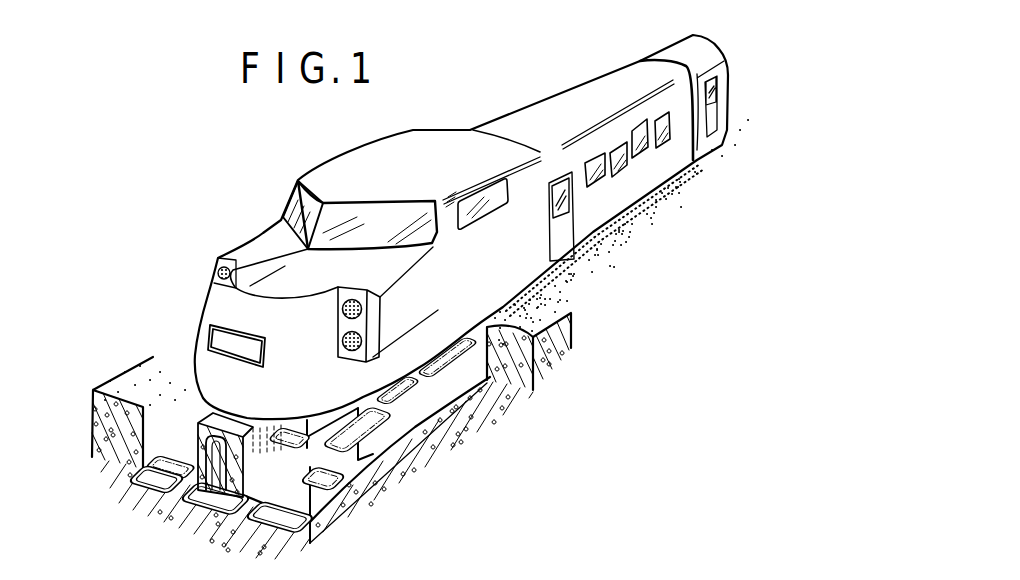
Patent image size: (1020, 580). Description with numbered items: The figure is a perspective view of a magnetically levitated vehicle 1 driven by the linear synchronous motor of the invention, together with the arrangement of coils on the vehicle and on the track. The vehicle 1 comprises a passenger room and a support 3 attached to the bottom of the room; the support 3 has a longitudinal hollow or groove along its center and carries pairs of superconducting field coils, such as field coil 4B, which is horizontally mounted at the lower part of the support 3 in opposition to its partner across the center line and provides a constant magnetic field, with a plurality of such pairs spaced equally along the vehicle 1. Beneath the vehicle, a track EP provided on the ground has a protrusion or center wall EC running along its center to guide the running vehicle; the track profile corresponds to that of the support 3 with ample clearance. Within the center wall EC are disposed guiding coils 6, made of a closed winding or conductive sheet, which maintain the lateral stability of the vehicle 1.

The magnetically levitated vehicle 1 is at (522, 116).
The support 3 is at (415, 425).
The field coil 4B is at (400, 428).
The guiding coil 6 is at (224, 494).
The track EP is at (138, 468).
The center wall EC is at (205, 450).